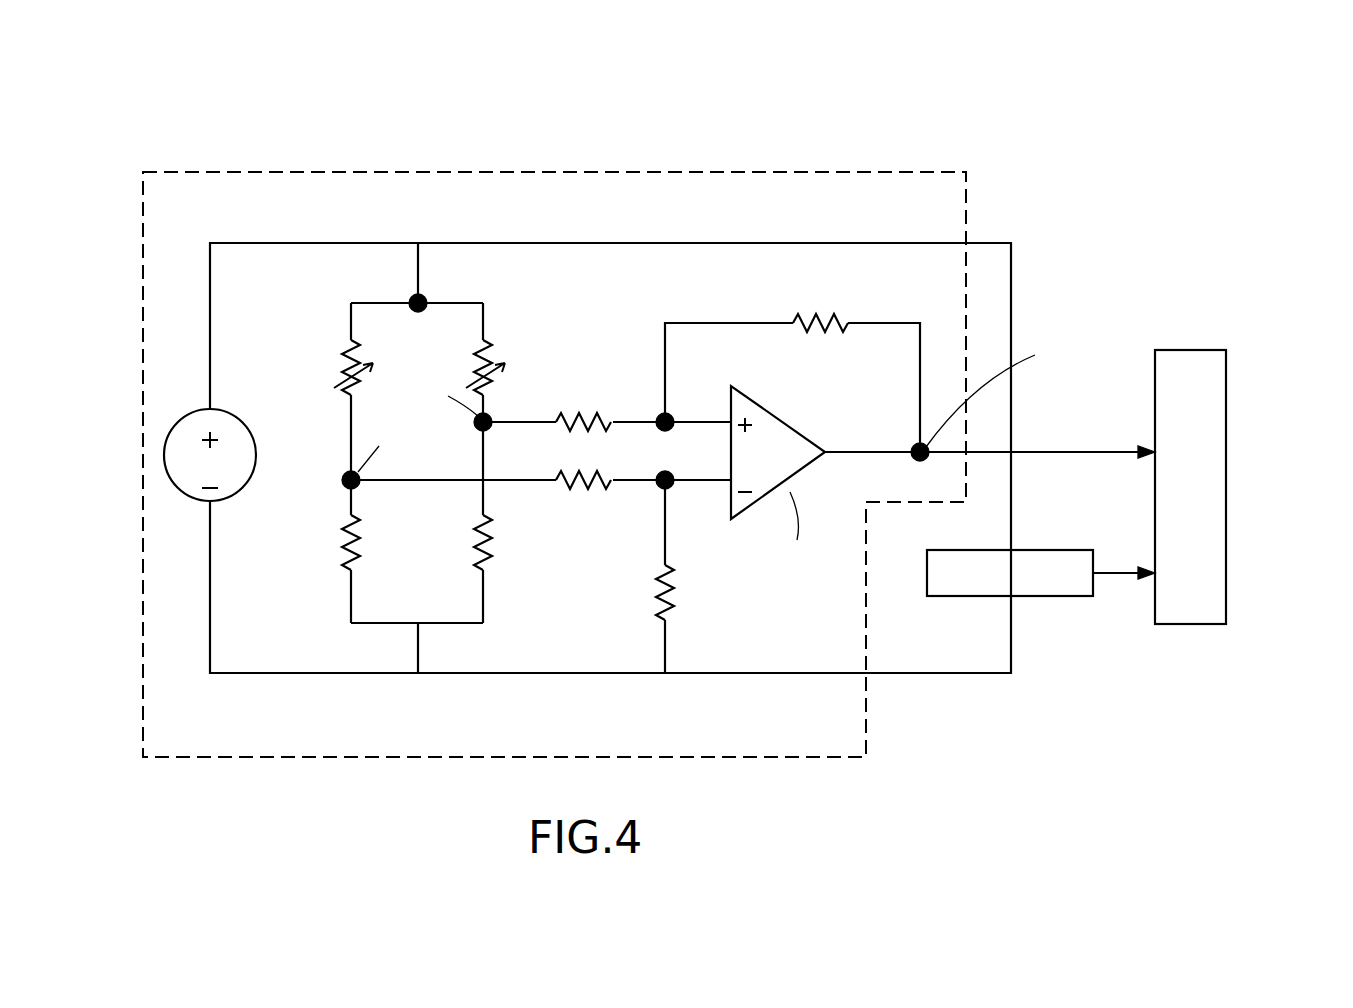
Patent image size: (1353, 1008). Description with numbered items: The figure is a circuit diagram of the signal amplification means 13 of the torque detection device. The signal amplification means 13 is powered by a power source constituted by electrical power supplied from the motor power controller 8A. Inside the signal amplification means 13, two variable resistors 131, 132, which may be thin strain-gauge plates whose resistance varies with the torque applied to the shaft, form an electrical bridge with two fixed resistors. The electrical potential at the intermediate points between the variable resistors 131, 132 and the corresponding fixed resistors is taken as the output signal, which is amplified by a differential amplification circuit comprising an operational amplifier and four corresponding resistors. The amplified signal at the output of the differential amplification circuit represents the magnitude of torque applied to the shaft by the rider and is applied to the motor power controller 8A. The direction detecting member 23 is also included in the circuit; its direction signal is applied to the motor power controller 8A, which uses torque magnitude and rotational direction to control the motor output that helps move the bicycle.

The signal amplification means 13 is at (649, 395).
The variable resistor 131 is at (330, 367).
The variable resistor 132 is at (515, 367).
The direction detecting member 23 is at (1043, 583).
The motor power controller 8A is at (1210, 478).